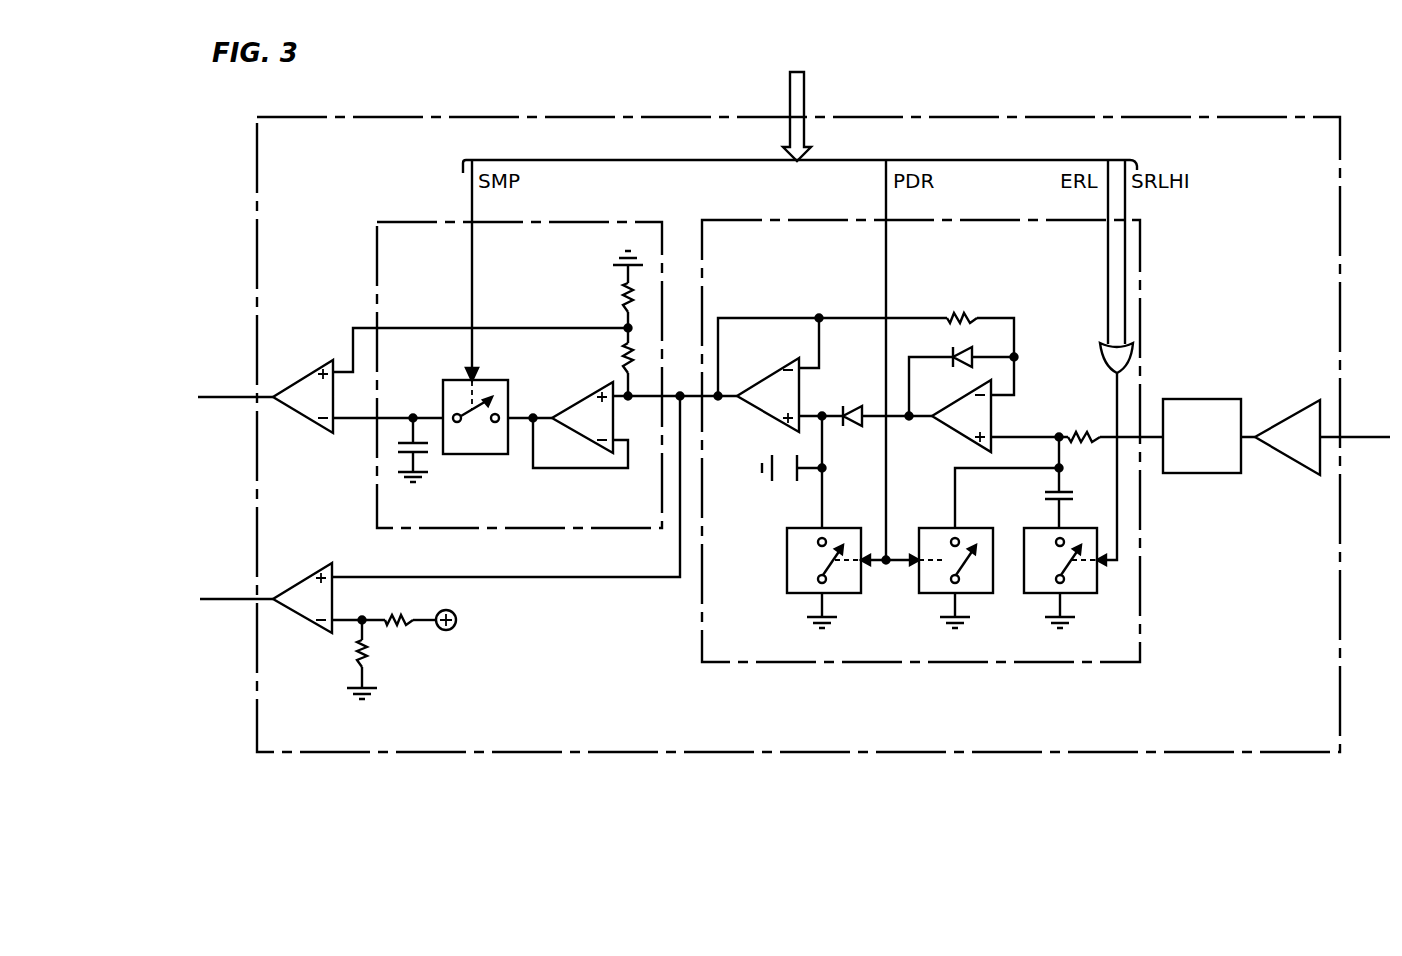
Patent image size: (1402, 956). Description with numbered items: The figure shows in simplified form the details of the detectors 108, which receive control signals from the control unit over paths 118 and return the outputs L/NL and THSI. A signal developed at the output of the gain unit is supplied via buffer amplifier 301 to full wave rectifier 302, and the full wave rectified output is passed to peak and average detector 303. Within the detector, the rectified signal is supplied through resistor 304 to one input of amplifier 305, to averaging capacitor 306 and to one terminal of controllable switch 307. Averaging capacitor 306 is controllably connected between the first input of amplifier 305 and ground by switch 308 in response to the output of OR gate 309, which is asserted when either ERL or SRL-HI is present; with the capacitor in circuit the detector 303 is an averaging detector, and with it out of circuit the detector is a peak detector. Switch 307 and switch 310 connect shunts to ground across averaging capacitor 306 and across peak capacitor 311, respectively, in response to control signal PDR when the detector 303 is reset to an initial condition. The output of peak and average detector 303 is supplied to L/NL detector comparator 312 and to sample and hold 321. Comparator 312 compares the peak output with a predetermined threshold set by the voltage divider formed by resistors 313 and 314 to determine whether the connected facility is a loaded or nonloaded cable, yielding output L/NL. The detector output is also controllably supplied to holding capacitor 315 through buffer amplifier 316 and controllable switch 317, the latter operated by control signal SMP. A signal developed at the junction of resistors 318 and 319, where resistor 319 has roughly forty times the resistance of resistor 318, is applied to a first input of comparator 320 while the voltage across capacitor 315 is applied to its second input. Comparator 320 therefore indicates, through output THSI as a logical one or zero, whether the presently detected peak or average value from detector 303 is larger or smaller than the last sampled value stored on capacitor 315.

The detectors 108 is at (418, 121).
The paths 118 is at (805, 88).
The buffer amplifier 301 is at (1280, 427).
The full wave rectifier 302 is at (1180, 398).
The peak and average detector 303 is at (907, 664).
The resistor 304 is at (1096, 430).
The amplifier 305 is at (967, 435).
The averaging capacitor 306 is at (1076, 492).
The controllable switch 307 is at (970, 527).
The switch 308 is at (1072, 527).
The OR gate 309 is at (1101, 347).
The switch 310 is at (838, 527).
The peak capacitor 311 is at (786, 490).
The L/NL detector comparator 312 is at (290, 588).
The resistor 313 is at (370, 659).
The resistor 314 is at (389, 615).
The holding capacitor 315 is at (430, 452).
The buffer amplifier 316 is at (582, 390).
The controllable switch 317 is at (462, 379).
The resistor 318 is at (621, 350).
The resistor 319 is at (621, 293).
The comparator 320 is at (290, 387).
The sample and hold 321 is at (506, 530).